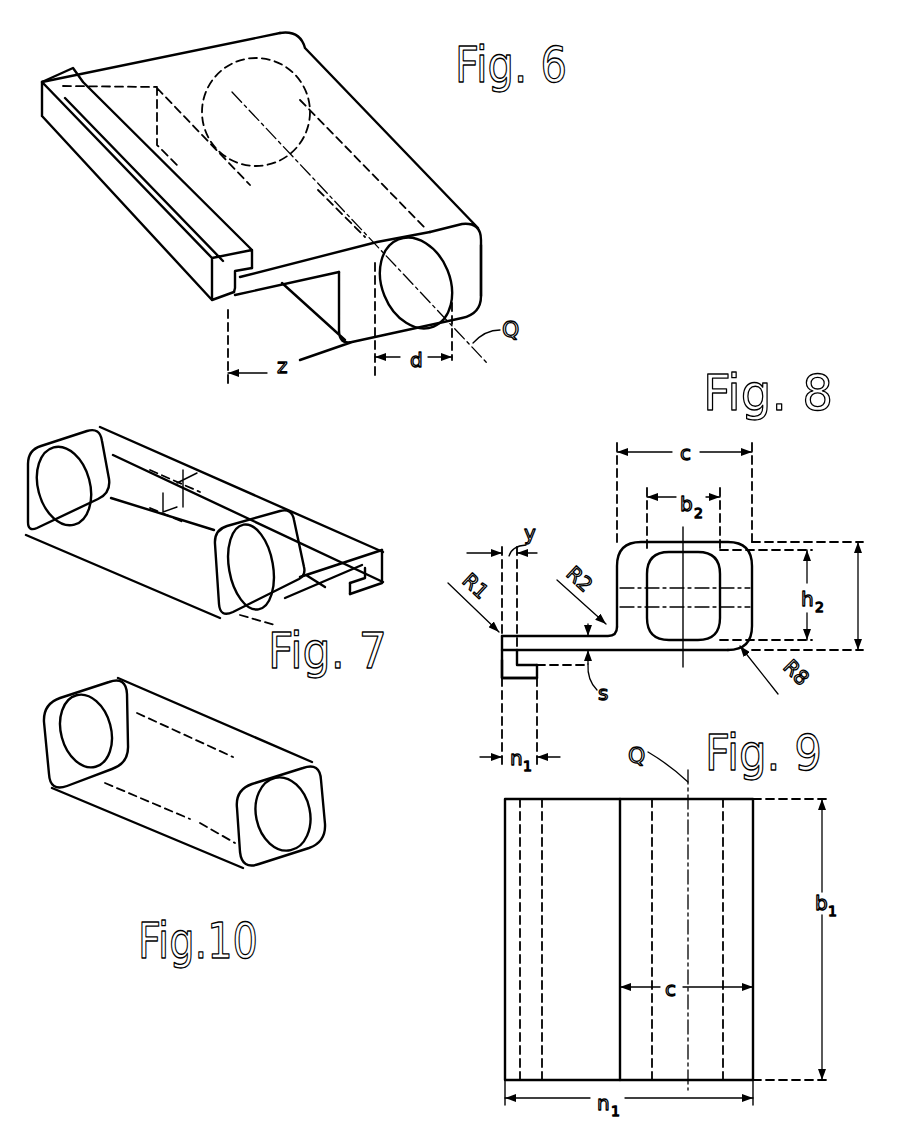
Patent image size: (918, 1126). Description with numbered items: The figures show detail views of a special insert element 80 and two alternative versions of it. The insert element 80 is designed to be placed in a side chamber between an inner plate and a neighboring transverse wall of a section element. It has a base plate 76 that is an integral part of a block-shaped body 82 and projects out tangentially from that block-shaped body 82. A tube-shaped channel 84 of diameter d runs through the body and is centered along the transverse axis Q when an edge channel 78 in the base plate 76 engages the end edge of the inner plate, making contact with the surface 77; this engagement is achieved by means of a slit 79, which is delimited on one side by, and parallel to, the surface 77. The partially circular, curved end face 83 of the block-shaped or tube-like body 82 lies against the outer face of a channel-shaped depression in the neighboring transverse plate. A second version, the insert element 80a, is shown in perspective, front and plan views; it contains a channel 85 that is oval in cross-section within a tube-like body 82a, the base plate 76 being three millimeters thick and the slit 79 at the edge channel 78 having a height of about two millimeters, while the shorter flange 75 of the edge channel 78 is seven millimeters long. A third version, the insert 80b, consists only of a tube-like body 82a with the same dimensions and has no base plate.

In FIG. 8, the shorter flange 75 is at (523, 668).
In FIG. 6, the base plate 76 is at (280, 280).
In FIG. 7, the base plate 76 is at (330, 557).
In FIG. 8, the base plate 76 is at (600, 642).
In FIG. 9, the base plate 76 is at (563, 890).
In FIG. 6, the surface 77 is at (372, 204).
In FIG. 6, the edge channel 78 is at (192, 260).
In FIG. 7, the edge channel 78 is at (385, 550).
In FIG. 8, the edge channel 78 is at (502, 652).
In FIG. 6, the slit 79 is at (233, 280).
In FIG. 7, the slit 79 is at (352, 594).
In FIG. 8, the slit 79 is at (527, 658).
In FIG. 6, the insert element 80 is at (385, 70).
In FIG. 7, the insert element 80a is at (68, 388).
In FIG. 8, the insert element 80a is at (561, 500).
In FIG. 9, the insert element 80a is at (502, 958).
In FIG. 10, the insert 80b is at (347, 780).
In FIG. 6, the block-shaped body 82 is at (478, 296).
In FIG. 7, the tube-like body 82a is at (218, 497).
In FIG. 8, the tube-like body 82a is at (727, 570).
In FIG. 9, the tube-like body 82a is at (707, 865).
In FIG. 10, the tube-like body 82a is at (267, 765).
In FIG. 6, the curved end face 83 is at (482, 282).
In FIG. 7, the curved end face 83 is at (172, 552).
In FIG. 6, the tube-shaped channel 84 is at (430, 275).
In FIG. 7, the channel 85 is at (260, 538).
In FIG. 8, the channel 85 is at (695, 620).
In FIG. 10, the channel 85 is at (280, 825).